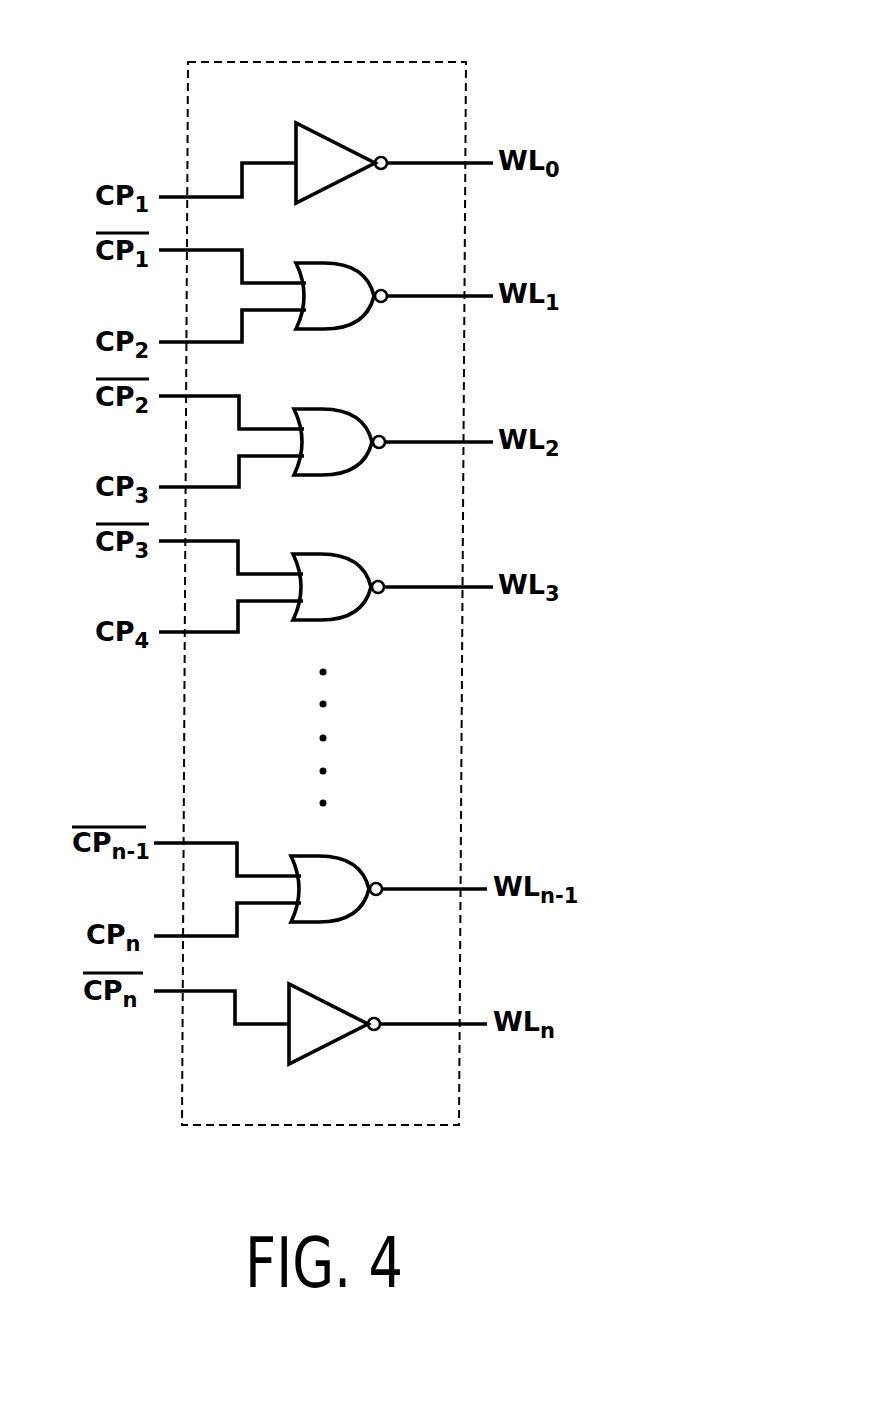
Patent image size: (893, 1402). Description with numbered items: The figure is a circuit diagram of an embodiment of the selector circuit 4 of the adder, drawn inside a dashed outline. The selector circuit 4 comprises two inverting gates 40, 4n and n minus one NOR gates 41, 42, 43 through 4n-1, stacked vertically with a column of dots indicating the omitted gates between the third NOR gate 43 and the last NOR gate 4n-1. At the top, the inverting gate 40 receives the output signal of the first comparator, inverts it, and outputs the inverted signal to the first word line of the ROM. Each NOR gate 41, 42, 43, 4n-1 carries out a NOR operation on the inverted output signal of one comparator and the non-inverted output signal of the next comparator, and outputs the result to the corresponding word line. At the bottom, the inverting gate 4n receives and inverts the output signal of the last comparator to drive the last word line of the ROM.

The selector circuit 4 is at (412, 63).
The inverting gate 40 is at (353, 147).
The NOR gate 41 is at (356, 280).
The NOR gate 42 is at (355, 426).
The NOR gate 43 is at (354, 571).
The NOR gate 4n-1 is at (350, 873).
The inverting gate 4n is at (350, 1009).